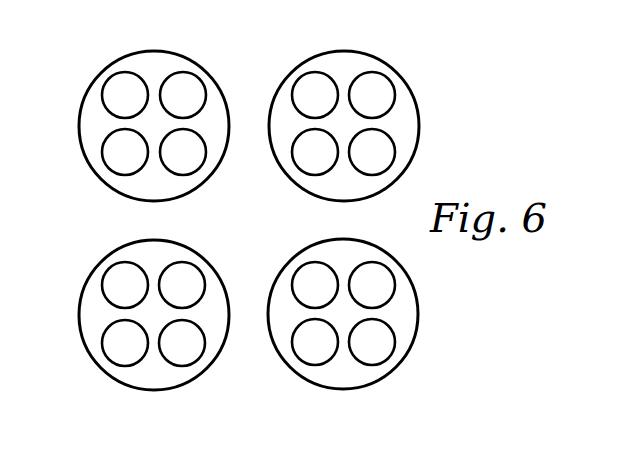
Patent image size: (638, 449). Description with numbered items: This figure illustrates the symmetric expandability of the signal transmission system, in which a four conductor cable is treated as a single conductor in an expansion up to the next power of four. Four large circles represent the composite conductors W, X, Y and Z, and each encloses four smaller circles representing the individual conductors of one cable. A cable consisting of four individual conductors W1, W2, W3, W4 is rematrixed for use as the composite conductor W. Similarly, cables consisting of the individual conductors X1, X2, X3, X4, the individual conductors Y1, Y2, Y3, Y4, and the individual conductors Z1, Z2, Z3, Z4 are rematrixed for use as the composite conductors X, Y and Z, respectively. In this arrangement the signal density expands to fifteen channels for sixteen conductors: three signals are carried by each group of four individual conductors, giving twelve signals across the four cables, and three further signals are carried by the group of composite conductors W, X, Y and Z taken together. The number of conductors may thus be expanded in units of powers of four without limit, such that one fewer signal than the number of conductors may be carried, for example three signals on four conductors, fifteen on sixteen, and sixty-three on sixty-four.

The composite conductor W is at (123, 52).
The composite conductor X is at (385, 60).
The composite conductor Y is at (388, 378).
The composite conductor Z is at (102, 368).
The individual conductor W1 is at (125, 95).
The individual conductor W2 is at (183, 95).
The individual conductor W3 is at (183, 152).
The individual conductor W4 is at (125, 152).
The individual conductor X1 is at (315, 95).
The individual conductor X2 is at (372, 95).
The individual conductor X3 is at (372, 152).
The individual conductor X4 is at (315, 152).
The individual conductor Y1 is at (315, 285).
The individual conductor Y2 is at (372, 285).
The individual conductor Y3 is at (372, 342).
The individual conductor Y4 is at (315, 342).
The individual conductor Z1 is at (125, 285).
The individual conductor Z2 is at (182, 285).
The individual conductor Z3 is at (182, 343).
The individual conductor Z4 is at (125, 343).